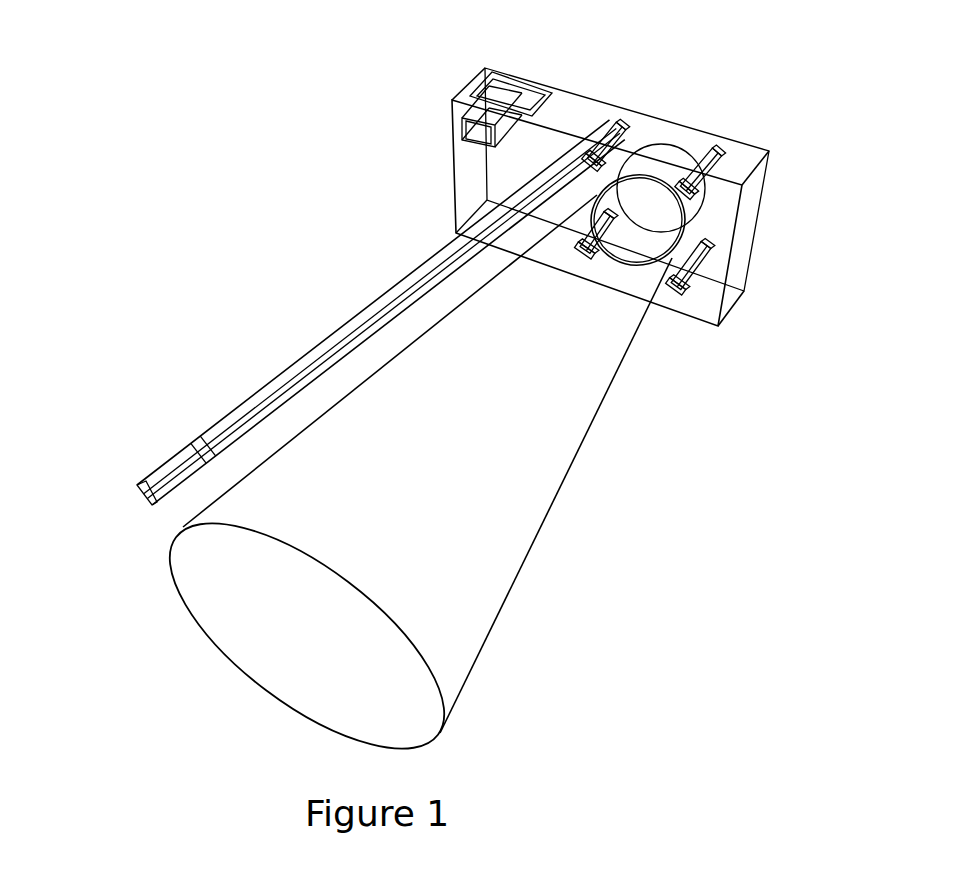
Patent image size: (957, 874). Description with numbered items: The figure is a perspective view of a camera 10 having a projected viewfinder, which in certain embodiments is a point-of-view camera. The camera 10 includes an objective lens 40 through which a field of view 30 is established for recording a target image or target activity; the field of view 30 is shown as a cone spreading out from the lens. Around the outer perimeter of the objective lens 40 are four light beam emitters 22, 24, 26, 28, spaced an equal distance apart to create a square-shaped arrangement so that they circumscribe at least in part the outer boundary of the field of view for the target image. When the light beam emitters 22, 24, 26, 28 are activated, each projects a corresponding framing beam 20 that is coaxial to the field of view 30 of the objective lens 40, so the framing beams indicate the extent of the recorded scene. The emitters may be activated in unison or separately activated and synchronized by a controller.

The camera 10 is at (387, 70).
The framing beam 20 is at (258, 400).
The light beam emitter 22 is at (705, 222).
The light beam emitter 24 is at (686, 278).
The light beam emitter 26 is at (595, 245).
The light beam emitter 28 is at (603, 130).
The field of view 30 is at (172, 567).
The objective lens 40 is at (652, 190).